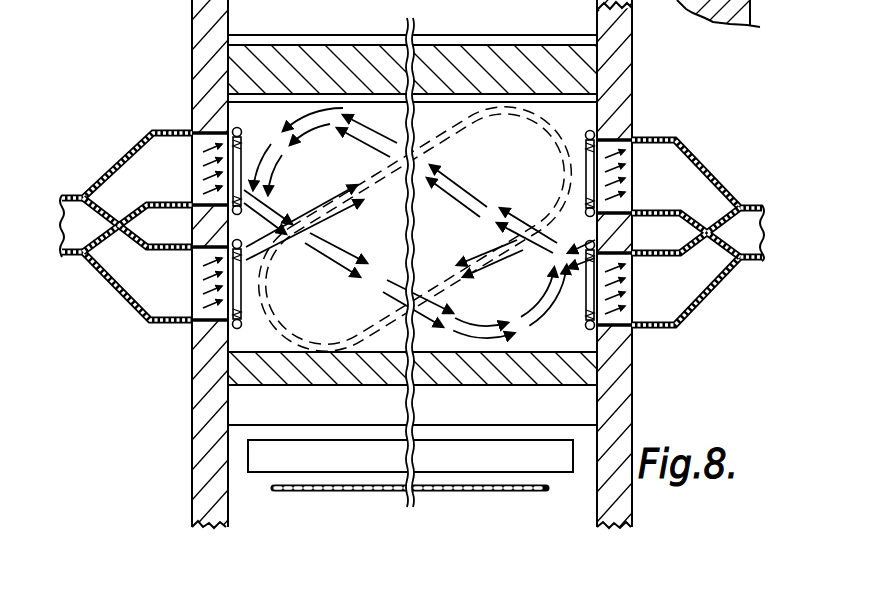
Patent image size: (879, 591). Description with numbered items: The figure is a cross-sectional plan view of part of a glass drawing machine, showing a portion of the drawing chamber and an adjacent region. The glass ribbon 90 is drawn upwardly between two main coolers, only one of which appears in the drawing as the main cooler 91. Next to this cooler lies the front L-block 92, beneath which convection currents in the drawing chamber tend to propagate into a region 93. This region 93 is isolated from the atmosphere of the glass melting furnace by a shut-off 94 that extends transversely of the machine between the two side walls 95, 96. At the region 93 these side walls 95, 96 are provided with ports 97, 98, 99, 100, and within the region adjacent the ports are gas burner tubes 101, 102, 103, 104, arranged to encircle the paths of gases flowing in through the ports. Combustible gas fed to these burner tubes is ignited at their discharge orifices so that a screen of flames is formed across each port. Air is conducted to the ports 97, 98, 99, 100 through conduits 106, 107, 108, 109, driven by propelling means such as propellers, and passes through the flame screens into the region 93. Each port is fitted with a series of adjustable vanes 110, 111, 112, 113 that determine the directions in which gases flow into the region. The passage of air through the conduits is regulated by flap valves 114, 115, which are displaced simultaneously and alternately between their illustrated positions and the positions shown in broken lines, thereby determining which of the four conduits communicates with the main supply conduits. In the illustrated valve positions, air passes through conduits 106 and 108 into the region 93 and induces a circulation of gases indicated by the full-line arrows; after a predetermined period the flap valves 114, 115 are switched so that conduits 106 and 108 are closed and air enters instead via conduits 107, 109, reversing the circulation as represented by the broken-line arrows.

The glass ribbon 90 is at (547, 492).
The main cooler 91 is at (295, 453).
The front L-block 92 is at (245, 368).
The region 93 is at (432, 246).
The shut-off 94 is at (480, 38).
The side wall 95 is at (213, 43).
The side wall 96 is at (615, 45).
The port 97 is at (210, 132).
The port 98 is at (625, 140).
The port 99 is at (600, 330).
The port 100 is at (207, 323).
The gas burner tube 101 is at (236, 130).
The gas burner tube 102 is at (596, 136).
The gas burner tube 103 is at (602, 340).
The gas burner tube 104 is at (231, 320).
The conduit 106 is at (110, 172).
The conduit 107 is at (708, 172).
The conduit 108 is at (707, 285).
The conduit 109 is at (110, 284).
The vanes 110 is at (201, 162).
The vanes 111 is at (628, 168).
The vanes 112 is at (614, 292).
The vanes 113 is at (203, 280).
The flap valve 114 is at (708, 228).
The flap valve 115 is at (117, 238).